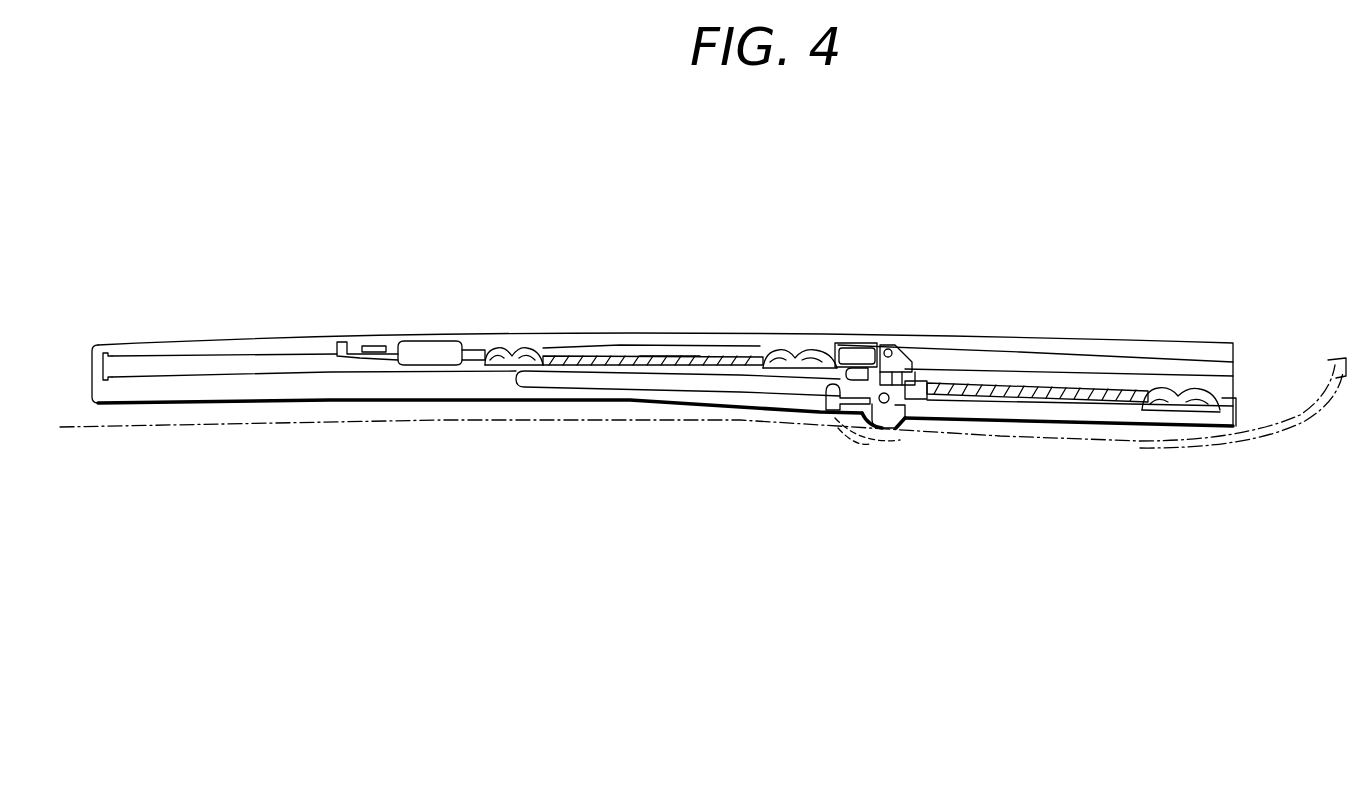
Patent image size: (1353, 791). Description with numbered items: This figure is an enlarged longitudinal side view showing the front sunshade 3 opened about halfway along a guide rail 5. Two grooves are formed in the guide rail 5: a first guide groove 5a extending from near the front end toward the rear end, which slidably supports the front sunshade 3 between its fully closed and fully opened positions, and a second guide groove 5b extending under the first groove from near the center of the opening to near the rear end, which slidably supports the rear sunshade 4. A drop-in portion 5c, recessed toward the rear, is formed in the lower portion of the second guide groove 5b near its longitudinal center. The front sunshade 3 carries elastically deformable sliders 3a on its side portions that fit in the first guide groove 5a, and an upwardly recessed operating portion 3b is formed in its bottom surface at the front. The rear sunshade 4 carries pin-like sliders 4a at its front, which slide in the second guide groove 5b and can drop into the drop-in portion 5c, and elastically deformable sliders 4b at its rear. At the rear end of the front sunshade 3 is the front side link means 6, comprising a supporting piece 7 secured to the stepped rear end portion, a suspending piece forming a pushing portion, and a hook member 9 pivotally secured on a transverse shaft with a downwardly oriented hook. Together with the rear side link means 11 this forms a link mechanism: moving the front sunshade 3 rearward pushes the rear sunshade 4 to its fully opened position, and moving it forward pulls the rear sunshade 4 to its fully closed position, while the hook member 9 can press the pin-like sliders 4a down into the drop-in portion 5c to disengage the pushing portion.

The front sunshade 3 is at (588, 352).
The elastically deformable sliders 3a is at (500, 345).
The operating portion 3b is at (413, 340).
The rear sunshade 4 is at (1027, 400).
The pin-like sliders 4a is at (855, 428).
The elastically deformable sliders 4b is at (1145, 405).
The guide rail 5 is at (472, 383).
The first guide groove 5a is at (657, 352).
The second guide groove 5b is at (687, 380).
The drop-in portion 5c is at (892, 430).
The front side link means 6 is at (884, 330).
The supporting piece 7 is at (852, 343).
The hook member 9 is at (905, 350).
The rear side link means 11 is at (928, 416).